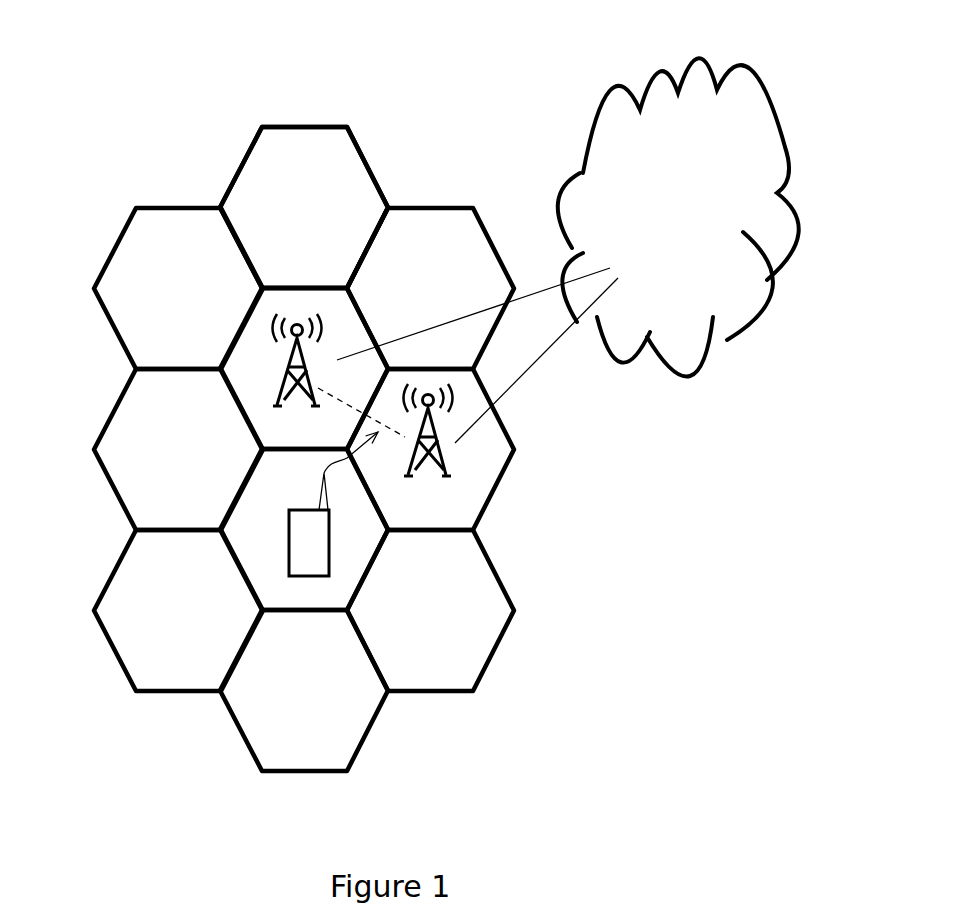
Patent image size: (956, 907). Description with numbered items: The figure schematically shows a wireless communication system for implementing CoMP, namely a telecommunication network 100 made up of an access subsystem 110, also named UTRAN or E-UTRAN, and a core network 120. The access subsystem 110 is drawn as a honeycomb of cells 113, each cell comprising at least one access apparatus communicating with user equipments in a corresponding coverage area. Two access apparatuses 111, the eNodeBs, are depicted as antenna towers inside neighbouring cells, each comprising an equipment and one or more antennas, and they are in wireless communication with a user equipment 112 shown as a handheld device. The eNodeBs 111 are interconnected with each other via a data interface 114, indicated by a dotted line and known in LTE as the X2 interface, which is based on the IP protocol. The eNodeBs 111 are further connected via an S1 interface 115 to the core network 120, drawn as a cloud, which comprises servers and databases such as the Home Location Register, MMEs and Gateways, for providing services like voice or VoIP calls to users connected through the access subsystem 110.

The telecommunication network 100 is at (435, 404).
The access subsystem 110 is at (351, 206).
The access apparatus 111 is at (285, 392).
The user equipment 112 is at (293, 553).
The cell 113 is at (174, 280).
The data interface 114 is at (325, 476).
The S1 interface 115 is at (538, 358).
The core network 120 is at (640, 127).